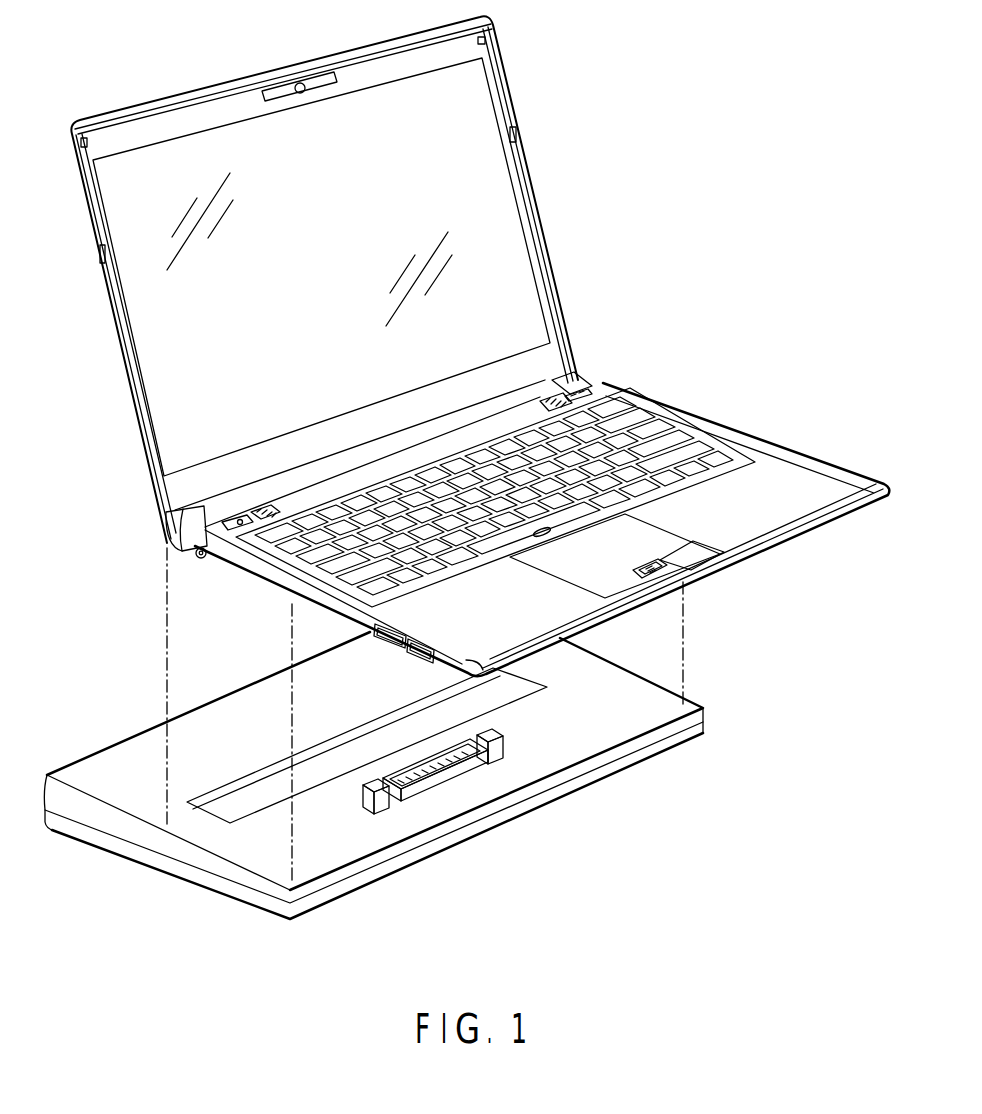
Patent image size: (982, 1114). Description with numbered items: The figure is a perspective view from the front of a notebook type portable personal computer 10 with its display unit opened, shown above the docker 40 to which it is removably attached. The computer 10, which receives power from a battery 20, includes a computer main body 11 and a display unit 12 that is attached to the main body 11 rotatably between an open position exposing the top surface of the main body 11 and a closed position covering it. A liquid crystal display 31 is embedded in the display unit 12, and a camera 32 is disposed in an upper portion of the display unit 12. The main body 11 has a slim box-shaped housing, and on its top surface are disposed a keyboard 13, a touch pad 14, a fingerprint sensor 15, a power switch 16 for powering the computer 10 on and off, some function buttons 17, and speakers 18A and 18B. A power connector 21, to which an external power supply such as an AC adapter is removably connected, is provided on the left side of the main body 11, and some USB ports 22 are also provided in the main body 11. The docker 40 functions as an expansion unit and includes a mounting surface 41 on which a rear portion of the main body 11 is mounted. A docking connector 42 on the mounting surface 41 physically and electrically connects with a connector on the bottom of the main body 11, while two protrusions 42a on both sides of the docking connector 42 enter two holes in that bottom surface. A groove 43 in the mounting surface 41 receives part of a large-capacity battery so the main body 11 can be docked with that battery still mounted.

The notebook type portable personal computer 10 is at (480, 354).
The computer main body 11 is at (487, 491).
The display unit 12 is at (339, 275).
The keyboard 13 is at (648, 423).
The touch pad 14 is at (615, 557).
The fingerprint sensor 15 is at (657, 575).
The power switch 16 is at (236, 544).
The function buttons 17 is at (586, 396).
The speaker 18A is at (253, 503).
The speaker 18B is at (549, 394).
The battery 20 is at (374, 466).
The power connector 21 is at (200, 559).
The USB ports 22 is at (412, 660).
The liquid crystal display 31 is at (470, 124).
The camera 32 is at (300, 84).
The docker 40 is at (373, 796).
The mounting surface 41 is at (268, 850).
The docking connector 42 is at (485, 841).
The protrusions 42a is at (374, 797).
The groove 43 is at (257, 803).